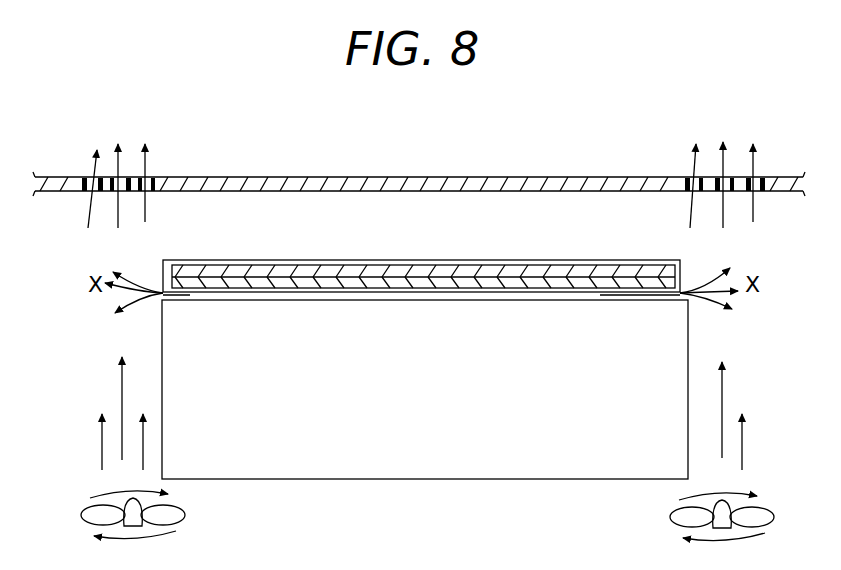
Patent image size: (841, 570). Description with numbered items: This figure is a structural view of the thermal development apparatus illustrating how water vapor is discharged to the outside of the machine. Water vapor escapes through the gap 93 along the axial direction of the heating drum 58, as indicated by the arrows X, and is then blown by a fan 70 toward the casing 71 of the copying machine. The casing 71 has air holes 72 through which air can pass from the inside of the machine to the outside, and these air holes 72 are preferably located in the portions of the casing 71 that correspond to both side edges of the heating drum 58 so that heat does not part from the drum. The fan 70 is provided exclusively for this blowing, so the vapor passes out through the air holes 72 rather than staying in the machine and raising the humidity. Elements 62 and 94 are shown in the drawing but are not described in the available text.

The casing 71 is at (473, 170).
The air holes 72 is at (85, 174).
The tray 62 is at (401, 258).
The absorbent layer 94 is at (553, 272).
The gap 93 is at (413, 298).
The heating drum 58 is at (430, 479).
The fan 70 is at (185, 510).